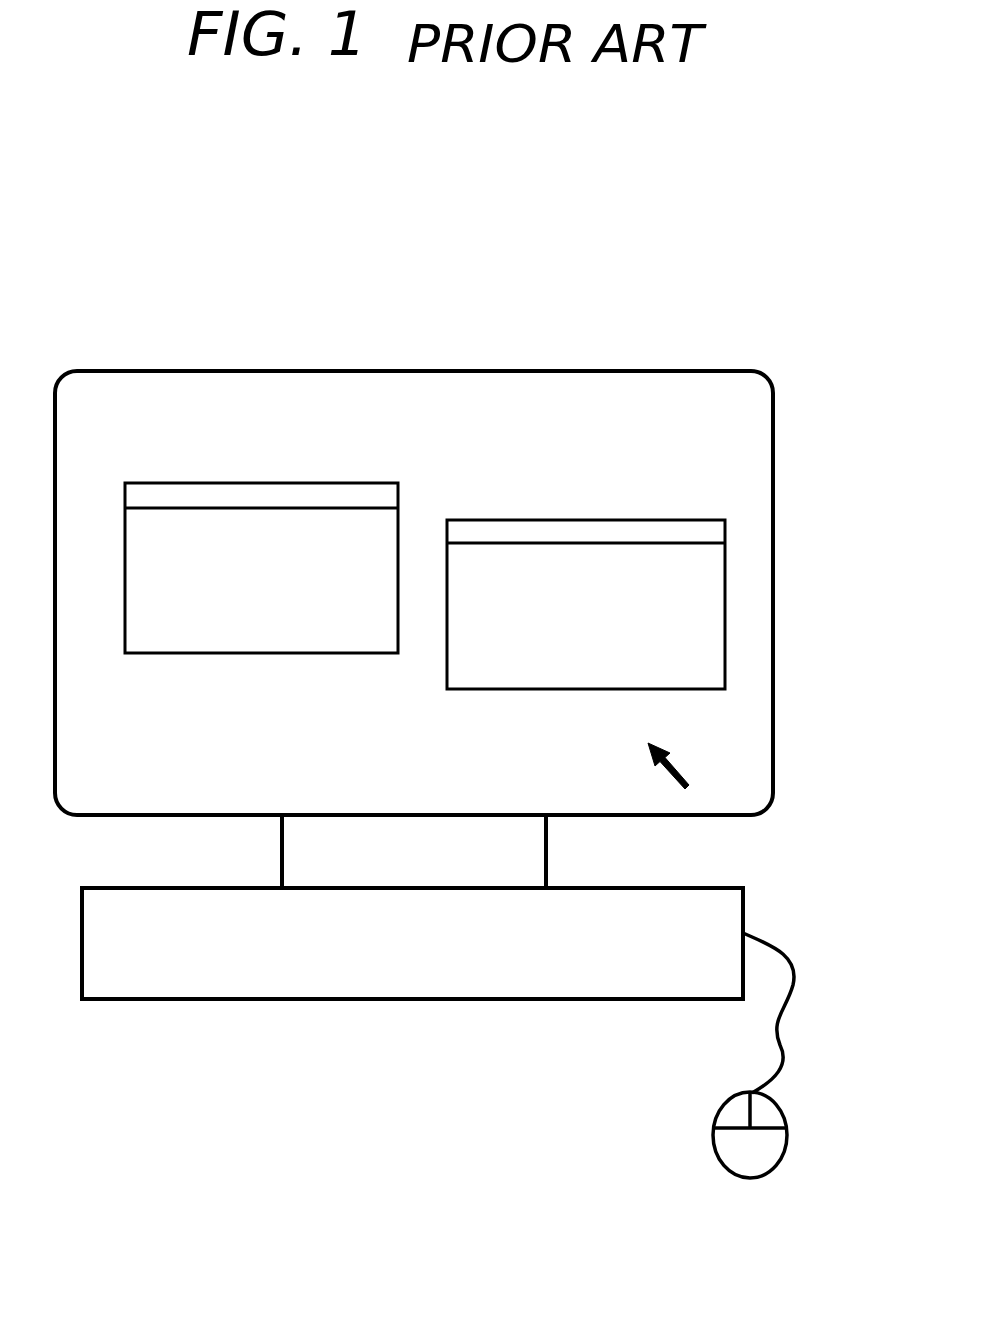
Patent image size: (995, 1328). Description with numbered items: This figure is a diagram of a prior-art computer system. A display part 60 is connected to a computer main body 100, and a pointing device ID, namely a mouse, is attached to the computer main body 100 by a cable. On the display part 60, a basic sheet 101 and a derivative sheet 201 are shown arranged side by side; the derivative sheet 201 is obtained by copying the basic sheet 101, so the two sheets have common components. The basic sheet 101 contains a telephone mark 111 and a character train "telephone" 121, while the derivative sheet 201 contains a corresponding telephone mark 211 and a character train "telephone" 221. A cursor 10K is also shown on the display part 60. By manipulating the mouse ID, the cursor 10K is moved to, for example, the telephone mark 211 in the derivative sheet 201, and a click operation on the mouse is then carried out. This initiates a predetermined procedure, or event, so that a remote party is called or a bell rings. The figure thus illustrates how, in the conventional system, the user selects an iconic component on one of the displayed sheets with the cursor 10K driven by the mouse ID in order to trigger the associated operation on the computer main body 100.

The display part 60 is at (725, 371).
The computer main body 100 is at (743, 888).
The input device (mouse) ID is at (785, 1120).
The basic sheet 101 is at (153, 483).
The telephone mark 111 is at (214, 553).
The character train "telephone" 121 is at (246, 616).
The derivative sheet 201 is at (476, 520).
The telephone mark 211 is at (540, 593).
The character train "telephone" 221 is at (575, 651).
The cursor 10K is at (683, 767).